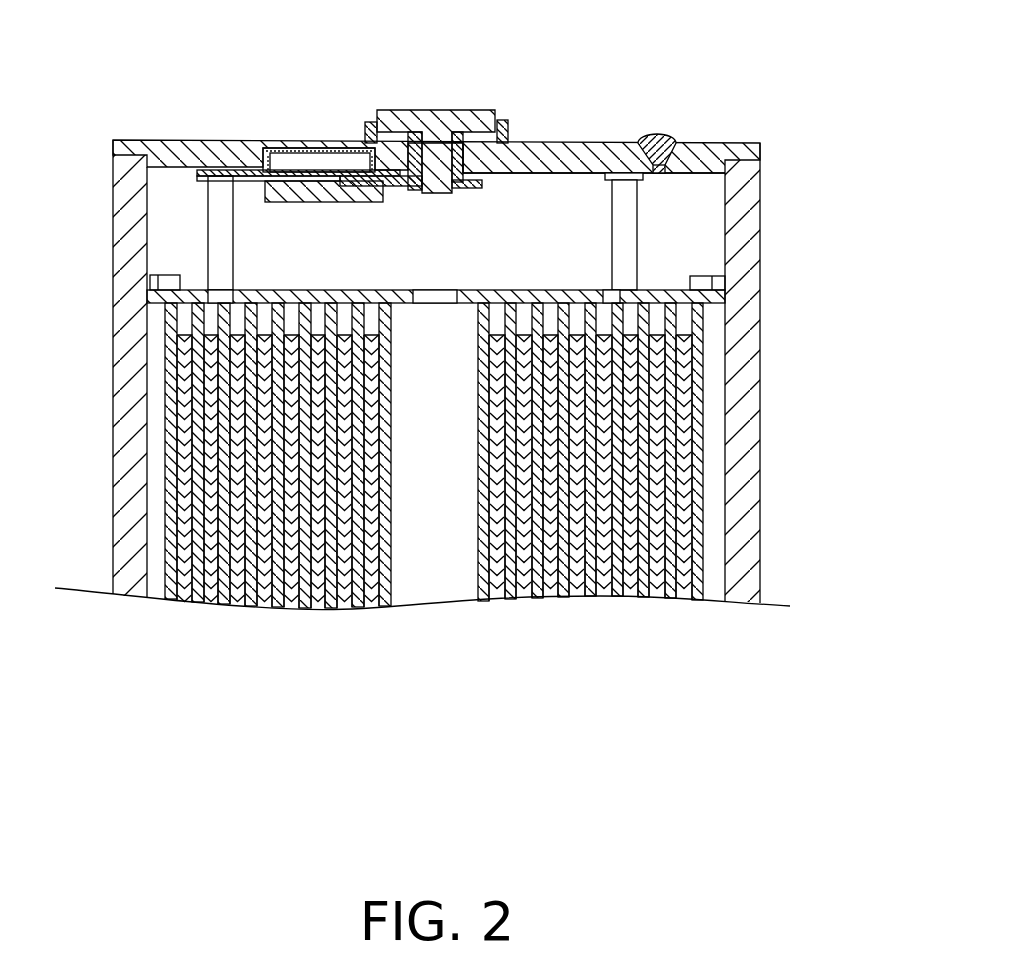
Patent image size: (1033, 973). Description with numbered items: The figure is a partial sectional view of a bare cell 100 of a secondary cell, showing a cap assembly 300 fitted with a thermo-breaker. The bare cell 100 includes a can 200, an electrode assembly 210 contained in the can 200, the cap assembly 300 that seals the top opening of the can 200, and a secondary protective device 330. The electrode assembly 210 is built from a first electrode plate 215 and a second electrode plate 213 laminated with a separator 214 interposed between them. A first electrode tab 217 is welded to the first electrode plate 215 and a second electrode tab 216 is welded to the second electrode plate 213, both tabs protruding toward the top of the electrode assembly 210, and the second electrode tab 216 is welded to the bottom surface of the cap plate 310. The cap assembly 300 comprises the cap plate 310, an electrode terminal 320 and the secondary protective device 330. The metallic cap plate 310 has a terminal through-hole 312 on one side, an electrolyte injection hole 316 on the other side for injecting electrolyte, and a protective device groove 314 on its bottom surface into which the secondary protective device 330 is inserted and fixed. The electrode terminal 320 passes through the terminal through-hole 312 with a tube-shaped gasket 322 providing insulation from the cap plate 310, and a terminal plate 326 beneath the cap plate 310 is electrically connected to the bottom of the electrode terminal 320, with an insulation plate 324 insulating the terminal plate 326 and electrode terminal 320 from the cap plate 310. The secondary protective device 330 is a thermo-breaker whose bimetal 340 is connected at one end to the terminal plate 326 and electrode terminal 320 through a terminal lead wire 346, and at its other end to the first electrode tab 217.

The bare cell 100 is at (772, 163).
The can 200 is at (747, 477).
The electrode assembly 210 is at (708, 392).
The second electrode plate 213 is at (680, 590).
The separator 214 is at (695, 598).
The first electrode plate 215 is at (655, 597).
The second electrode tab 216 is at (628, 235).
The first electrode tab 217 is at (217, 197).
The cap assembly 300 is at (607, 103).
The cap plate 310 is at (172, 152).
The terminal through-hole 312 is at (463, 155).
The protective device groove 314 is at (258, 170).
The electrolyte injection hole 316 is at (657, 140).
The electrode terminal 320 is at (438, 123).
The gasket 322 is at (503, 122).
The insulation plate 324 is at (390, 128).
The terminal plate 326 is at (470, 190).
The secondary protective device 330 is at (272, 208).
The bimetal 340 is at (273, 148).
The terminal lead wire 346 is at (345, 158).